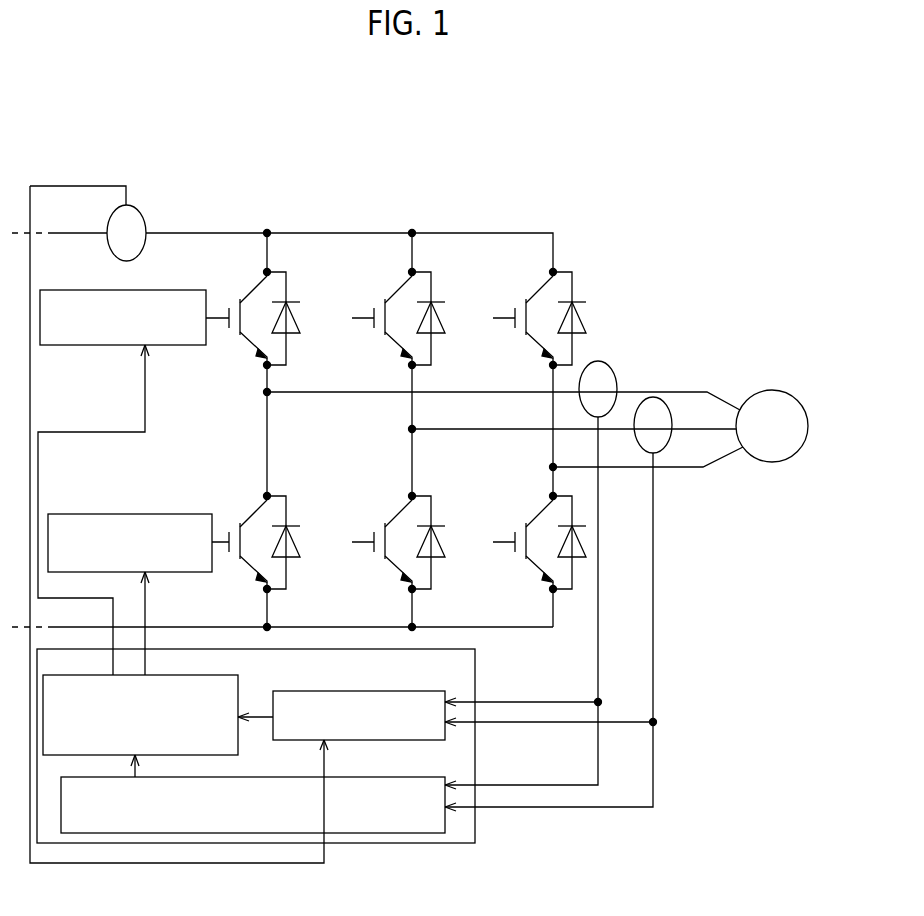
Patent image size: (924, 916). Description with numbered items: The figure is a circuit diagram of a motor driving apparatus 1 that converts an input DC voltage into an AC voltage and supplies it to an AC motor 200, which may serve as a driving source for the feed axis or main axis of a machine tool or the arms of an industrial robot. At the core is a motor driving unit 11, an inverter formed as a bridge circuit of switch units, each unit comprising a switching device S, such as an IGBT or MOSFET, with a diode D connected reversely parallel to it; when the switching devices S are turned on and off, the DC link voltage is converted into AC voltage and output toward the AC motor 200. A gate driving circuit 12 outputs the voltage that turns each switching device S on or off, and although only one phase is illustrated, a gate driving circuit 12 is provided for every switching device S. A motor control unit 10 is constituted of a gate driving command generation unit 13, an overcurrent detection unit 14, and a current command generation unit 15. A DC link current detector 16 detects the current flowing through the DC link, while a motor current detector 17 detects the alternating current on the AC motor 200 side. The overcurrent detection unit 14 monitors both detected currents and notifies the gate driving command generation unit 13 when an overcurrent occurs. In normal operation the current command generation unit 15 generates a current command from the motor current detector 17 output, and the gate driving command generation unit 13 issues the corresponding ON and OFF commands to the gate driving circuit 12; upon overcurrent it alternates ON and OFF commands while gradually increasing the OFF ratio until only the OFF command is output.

The motor driving apparatus 1 is at (430, 111).
The motor control unit 10 is at (432, 843).
The motor driving unit 11 is at (457, 208).
The gate driving circuit 12 is at (85, 290).
The gate driving command generation unit 13 is at (238, 689).
The overcurrent detection unit 14 is at (410, 691).
The current command generation unit 15 is at (380, 777).
The DC link current detector 16 is at (133, 204).
The motor current detector 17 is at (617, 377).
The AC motor 200 is at (773, 462).
The switching device S is at (396, 418).
The diode D is at (578, 293).